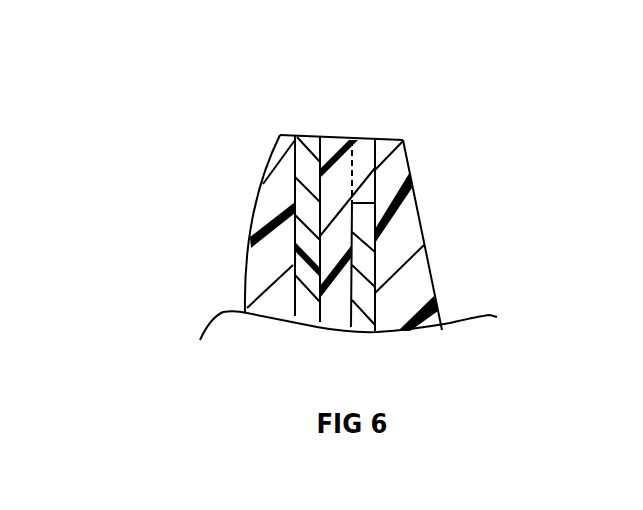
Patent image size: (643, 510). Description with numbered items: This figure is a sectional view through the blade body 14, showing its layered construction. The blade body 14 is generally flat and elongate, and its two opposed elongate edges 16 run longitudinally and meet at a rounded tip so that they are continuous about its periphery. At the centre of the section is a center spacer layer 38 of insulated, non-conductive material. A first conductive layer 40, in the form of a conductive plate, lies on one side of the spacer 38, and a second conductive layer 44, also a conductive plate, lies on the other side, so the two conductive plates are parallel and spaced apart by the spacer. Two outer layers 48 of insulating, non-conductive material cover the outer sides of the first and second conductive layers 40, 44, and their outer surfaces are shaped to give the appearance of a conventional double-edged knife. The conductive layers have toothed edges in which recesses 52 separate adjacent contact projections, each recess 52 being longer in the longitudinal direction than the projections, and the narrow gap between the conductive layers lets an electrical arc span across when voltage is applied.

The blade body 14 is at (185, 265).
The opposed elongate edges 16 is at (228, 131).
The center spacer layer 38 is at (335, 108).
The first conductive layer 40 is at (369, 118).
The second conductive layer 44 is at (305, 104).
The outer layers 48 is at (260, 280).
The recesses 52 is at (353, 204).